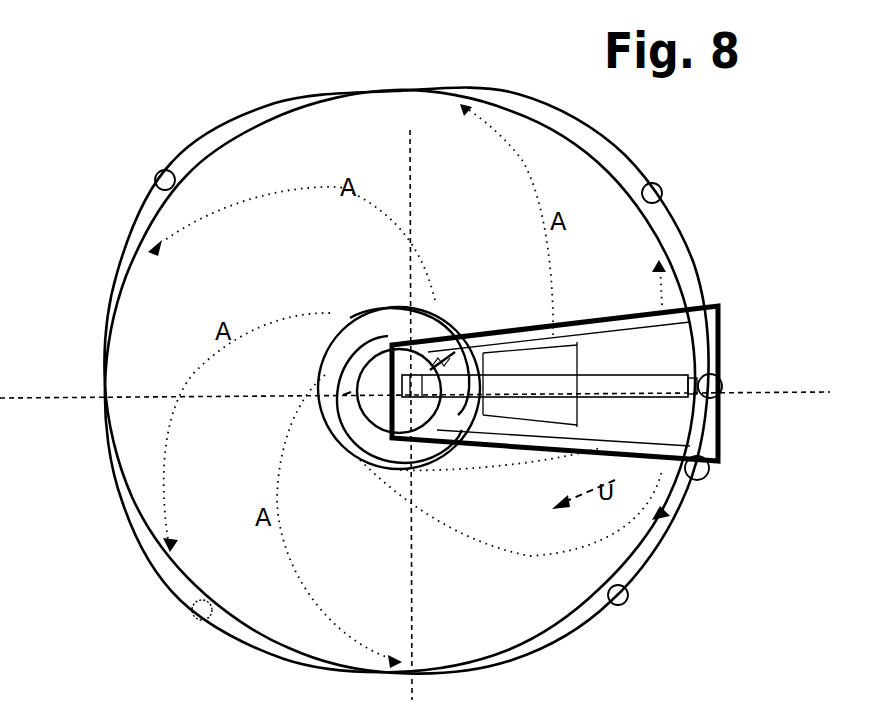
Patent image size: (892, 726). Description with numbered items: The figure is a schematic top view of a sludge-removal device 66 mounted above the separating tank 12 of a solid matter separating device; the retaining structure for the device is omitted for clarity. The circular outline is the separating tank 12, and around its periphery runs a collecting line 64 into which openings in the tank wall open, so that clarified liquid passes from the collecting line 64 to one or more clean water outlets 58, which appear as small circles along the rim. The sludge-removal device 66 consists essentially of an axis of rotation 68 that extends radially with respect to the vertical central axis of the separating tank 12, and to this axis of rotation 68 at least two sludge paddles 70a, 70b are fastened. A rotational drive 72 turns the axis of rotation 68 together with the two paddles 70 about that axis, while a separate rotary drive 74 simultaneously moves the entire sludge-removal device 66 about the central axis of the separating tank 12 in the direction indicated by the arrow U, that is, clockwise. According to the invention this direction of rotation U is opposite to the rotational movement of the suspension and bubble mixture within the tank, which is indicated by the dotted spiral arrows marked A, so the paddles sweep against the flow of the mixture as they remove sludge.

The separating tank 12 is at (380, 118).
The clean water outlet 58 is at (165, 176).
The collecting line 64 is at (126, 242).
The sludge-removal device 66 is at (742, 282).
The axis of rotation 68 is at (697, 350).
The paddles 70 is at (625, 717).
The sludge paddle 70a is at (673, 342).
The sludge paddle 70b is at (682, 418).
The rotational drive 72 is at (722, 378).
The rotary drive 74 is at (708, 471).